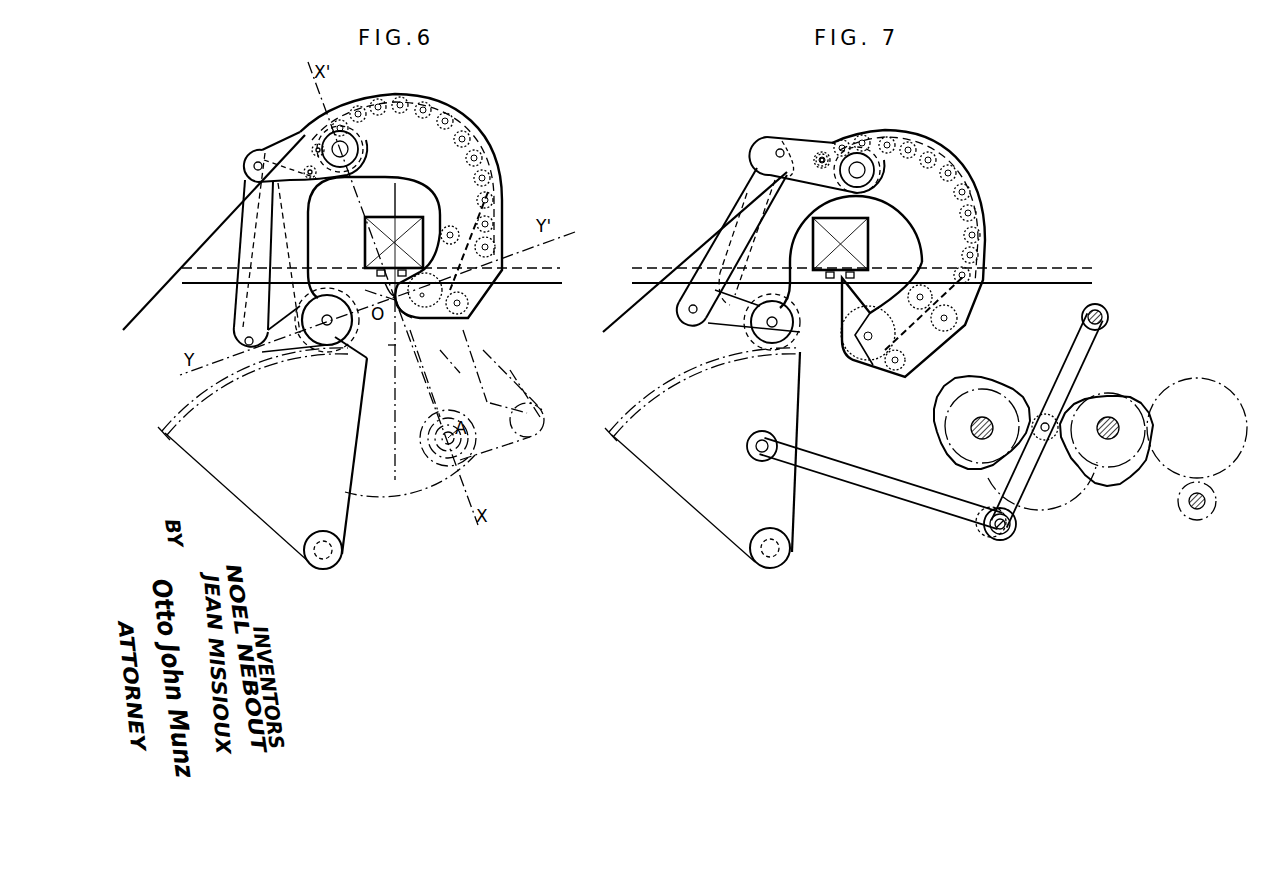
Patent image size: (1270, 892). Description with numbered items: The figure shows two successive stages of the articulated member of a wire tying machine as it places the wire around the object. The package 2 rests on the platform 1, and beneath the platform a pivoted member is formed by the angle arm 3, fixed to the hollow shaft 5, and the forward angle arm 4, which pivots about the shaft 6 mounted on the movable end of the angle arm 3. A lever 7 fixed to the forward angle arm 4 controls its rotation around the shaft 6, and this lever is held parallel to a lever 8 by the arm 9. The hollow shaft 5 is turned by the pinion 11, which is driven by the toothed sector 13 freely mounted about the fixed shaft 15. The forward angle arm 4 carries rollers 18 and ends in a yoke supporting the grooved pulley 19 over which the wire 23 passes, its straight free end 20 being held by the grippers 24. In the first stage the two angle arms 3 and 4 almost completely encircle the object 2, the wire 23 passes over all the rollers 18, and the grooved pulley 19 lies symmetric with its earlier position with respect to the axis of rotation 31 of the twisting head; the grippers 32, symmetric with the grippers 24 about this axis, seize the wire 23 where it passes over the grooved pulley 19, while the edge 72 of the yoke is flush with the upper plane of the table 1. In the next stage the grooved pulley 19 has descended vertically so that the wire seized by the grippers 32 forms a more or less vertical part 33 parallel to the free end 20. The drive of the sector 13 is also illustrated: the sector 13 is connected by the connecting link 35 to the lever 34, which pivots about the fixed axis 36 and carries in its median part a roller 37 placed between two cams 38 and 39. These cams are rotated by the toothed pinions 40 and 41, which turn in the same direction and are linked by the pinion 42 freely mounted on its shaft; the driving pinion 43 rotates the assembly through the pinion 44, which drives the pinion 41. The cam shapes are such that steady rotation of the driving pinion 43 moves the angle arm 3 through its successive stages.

In FIG. 6, the platform 1 is at (545, 278).
In FIG. 7, the platform 1 is at (1020, 276).
In FIG. 6, the package 2 is at (418, 234).
In FIG. 7, the package 2 is at (872, 250).
In FIG. 6, the angle arm 3 is at (305, 234).
In FIG. 7, the angle arm 3 is at (793, 254).
In FIG. 6, the forward angle arm 4 is at (458, 132).
In FIG. 7, the forward angle arm 4 is at (945, 158).
In FIG. 6, the shaft 5 is at (336, 350).
In FIG. 7, the shaft 5 is at (793, 327).
In FIG. 6, the shaft 6 is at (332, 140).
In FIG. 7, the shaft 6 is at (859, 162).
In FIG. 6, the lever 7 is at (274, 150).
In FIG. 7, the lever 7 is at (795, 148).
In FIG. 6, the lever 8 is at (292, 350).
In FIG. 7, the lever 8 is at (712, 324).
In FIG. 6, the arm 9 is at (222, 246).
In FIG. 7, the arm 9 is at (746, 192).
In FIG. 7, the pinion 11 is at (746, 344).
In FIG. 6, the toothed sector 13 is at (350, 460).
In FIG. 7, the toothed sector 13 is at (793, 388).
In FIG. 6, the fixed shaft 15 is at (330, 556).
In FIG. 7, the fixed shaft 15 is at (786, 552).
In FIG. 7, the rollers 18 is at (957, 190).
In FIG. 6, the grooved pulley 19 is at (418, 312).
In FIG. 7, the grooved pulley 19 is at (852, 345).
In FIG. 6, the free end 20 is at (392, 306).
In FIG. 7, the free end 20 is at (821, 314).
In FIG. 6, the wire 23 is at (168, 288).
In FIG. 7, the wire 23 is at (684, 266).
In FIG. 6, the grippers 24 is at (380, 279).
In FIG. 7, the grippers 24 is at (832, 280).
In FIG. 6, the axis of rotation 31 is at (407, 200).
In FIG. 6, the grippers 32 is at (390, 268).
In FIG. 7, the grippers 32 is at (860, 318).
In FIG. 7, the vertical part 33 is at (861, 310).
In FIG. 6, the edge 72 is at (434, 270).
In FIG. 7, the lever 34 is at (1028, 470).
In FIG. 7, the connecting link 35 is at (904, 504).
In FIG. 7, the fixed axis 36 is at (1109, 316).
In FIG. 7, the roller 37 is at (1043, 414).
In FIG. 7, the cam 38 is at (938, 420).
In FIG. 7, the cam 39 is at (1112, 474).
In FIG. 7, the toothed pinion 40 is at (996, 394).
In FIG. 7, the toothed pinion 41 is at (1122, 402).
In FIG. 7, the pinion 42 is at (1078, 520).
In FIG. 7, the driving pinion 43 is at (1208, 500).
In FIG. 7, the pinion 44 is at (1220, 388).